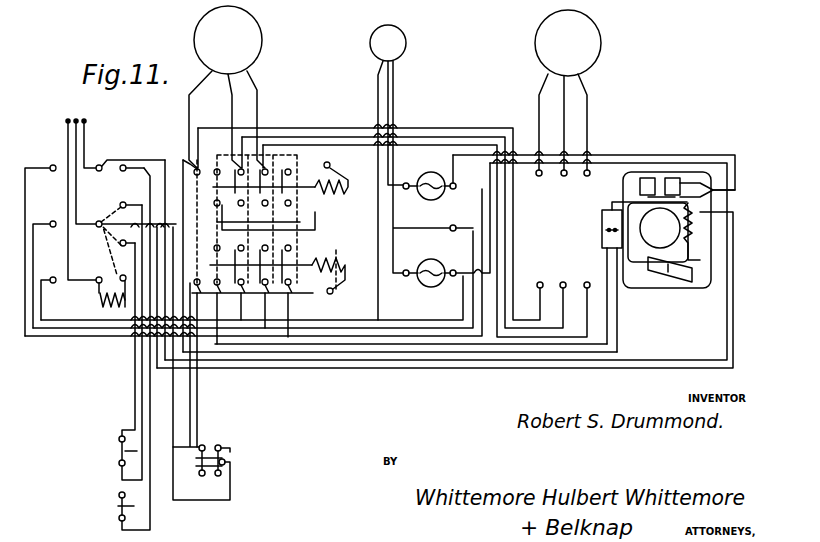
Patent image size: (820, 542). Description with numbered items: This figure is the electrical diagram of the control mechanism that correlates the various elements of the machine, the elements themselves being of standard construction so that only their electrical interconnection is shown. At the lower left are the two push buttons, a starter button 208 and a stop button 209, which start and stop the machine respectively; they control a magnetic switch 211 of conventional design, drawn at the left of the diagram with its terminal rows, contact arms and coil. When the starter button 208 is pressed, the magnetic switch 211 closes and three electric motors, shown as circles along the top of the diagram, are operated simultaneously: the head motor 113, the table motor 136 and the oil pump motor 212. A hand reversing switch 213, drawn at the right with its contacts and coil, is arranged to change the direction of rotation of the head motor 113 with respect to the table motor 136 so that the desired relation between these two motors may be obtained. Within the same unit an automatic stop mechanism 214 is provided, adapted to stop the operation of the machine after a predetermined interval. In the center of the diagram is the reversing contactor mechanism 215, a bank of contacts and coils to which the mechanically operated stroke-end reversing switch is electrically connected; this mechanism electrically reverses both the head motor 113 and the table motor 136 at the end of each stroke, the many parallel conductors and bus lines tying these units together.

The table motor 136 is at (250, 47).
The oil pump motor 212 is at (395, 50).
The head motor 113 is at (588, 57).
The hand reversing switch 213 is at (660, 240).
The automatic stop mechanism 214 is at (665, 282).
The magnetic switch 211 is at (97, 263).
The reversing contactor mechanism 215 is at (337, 307).
The starter push button 208 is at (118, 449).
The stop push button 209 is at (118, 502).